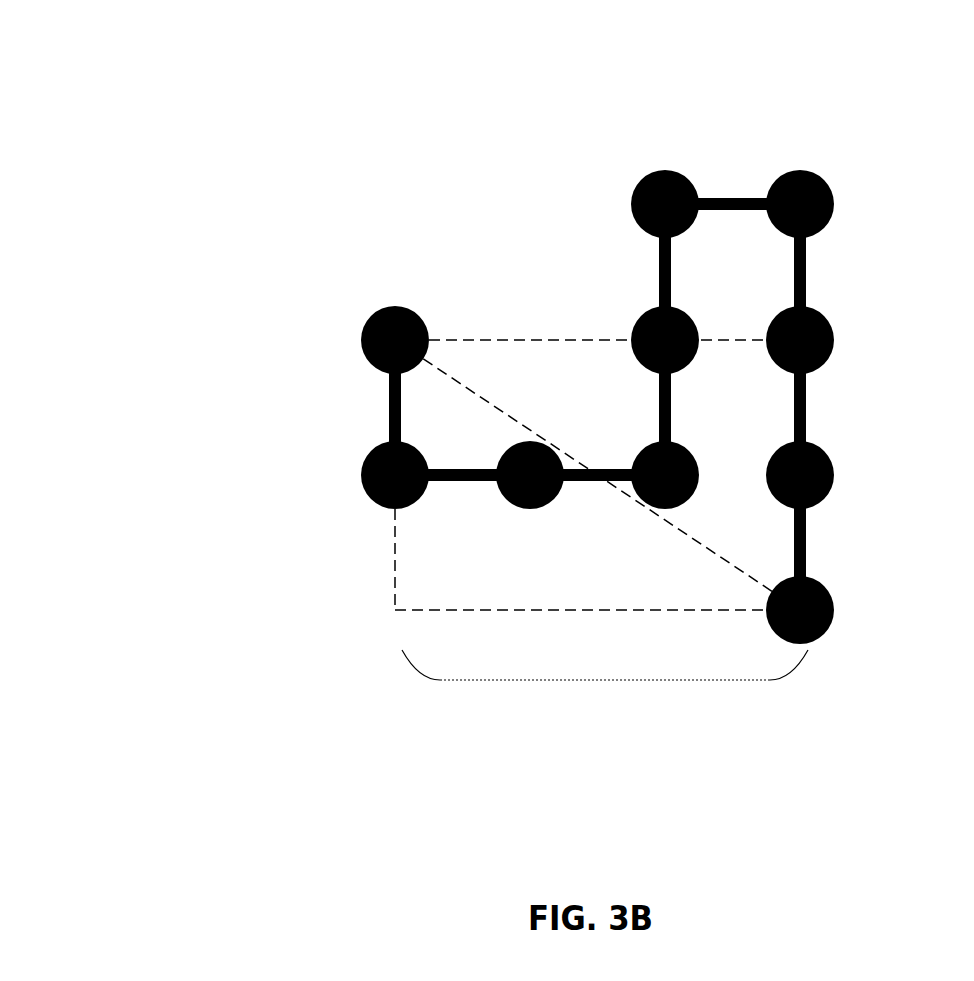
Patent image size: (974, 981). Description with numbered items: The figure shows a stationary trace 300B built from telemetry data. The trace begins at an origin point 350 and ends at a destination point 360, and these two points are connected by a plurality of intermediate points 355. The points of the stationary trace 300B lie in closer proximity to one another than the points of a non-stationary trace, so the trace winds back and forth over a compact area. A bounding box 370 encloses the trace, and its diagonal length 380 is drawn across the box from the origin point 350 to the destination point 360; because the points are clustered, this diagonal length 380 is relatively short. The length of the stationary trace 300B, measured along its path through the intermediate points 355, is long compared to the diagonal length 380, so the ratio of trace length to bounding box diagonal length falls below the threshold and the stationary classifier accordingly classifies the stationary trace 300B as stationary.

The stationary trace 300B is at (72, 38).
The origin point 350 is at (361, 341).
The intermediate points 355 is at (605, 680).
The destination point 360 is at (834, 606).
The bounding box 370 is at (588, 338).
The diagonal length 380 is at (500, 410).